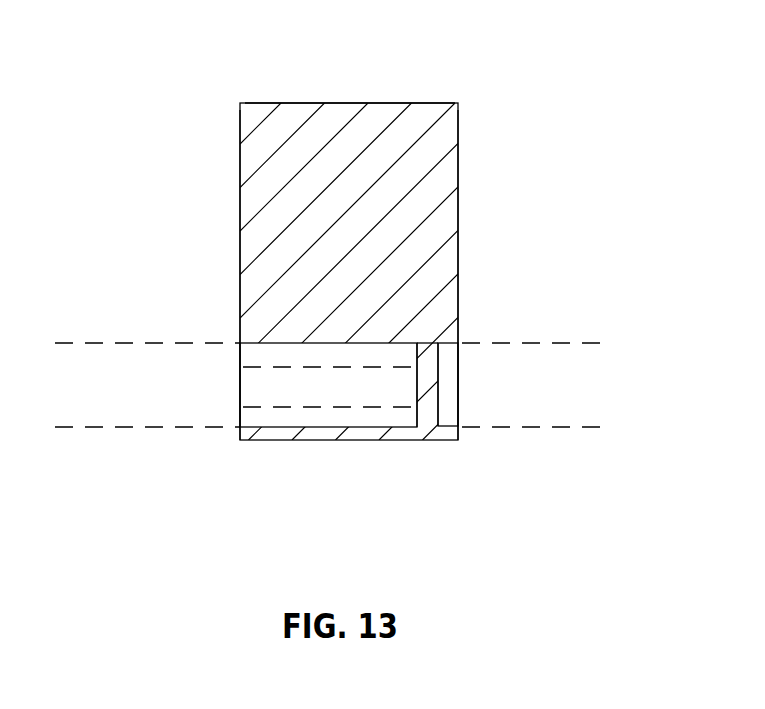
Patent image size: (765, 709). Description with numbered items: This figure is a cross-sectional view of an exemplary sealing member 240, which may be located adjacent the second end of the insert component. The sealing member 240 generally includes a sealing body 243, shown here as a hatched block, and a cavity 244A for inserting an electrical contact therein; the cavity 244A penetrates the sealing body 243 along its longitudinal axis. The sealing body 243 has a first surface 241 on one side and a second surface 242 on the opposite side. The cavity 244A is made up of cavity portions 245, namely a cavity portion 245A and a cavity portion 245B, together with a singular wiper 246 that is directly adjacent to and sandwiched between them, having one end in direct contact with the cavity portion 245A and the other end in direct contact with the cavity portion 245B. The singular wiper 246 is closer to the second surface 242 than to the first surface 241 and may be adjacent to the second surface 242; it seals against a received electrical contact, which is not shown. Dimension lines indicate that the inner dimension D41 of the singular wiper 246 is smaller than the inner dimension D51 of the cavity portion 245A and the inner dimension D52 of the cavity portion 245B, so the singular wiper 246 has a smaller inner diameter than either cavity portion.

The sealing member 240 is at (243, 68).
The first surface 241 is at (240, 170).
The second surface 242 is at (458, 188).
The sealing body 243 is at (440, 128).
The cavity 244A is at (447, 387).
The cavity portion 245 is at (366, 436).
The cavity portion 245A is at (300, 415).
The cavity portion 245B is at (450, 414).
The singular wiper 246 is at (426, 358).
The inner dimension of the singular wiper D41 is at (223, 367).
The inner dimension of the cavity portion 245a D51 is at (122, 343).
The inner dimension of the cavity portion 245b D52 is at (582, 343).